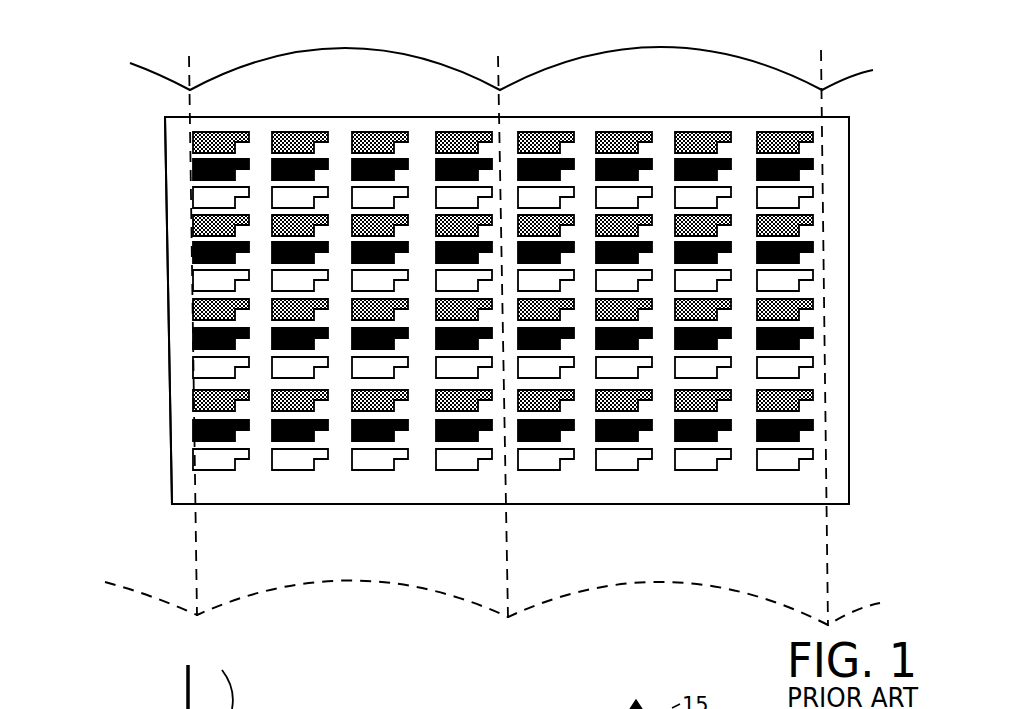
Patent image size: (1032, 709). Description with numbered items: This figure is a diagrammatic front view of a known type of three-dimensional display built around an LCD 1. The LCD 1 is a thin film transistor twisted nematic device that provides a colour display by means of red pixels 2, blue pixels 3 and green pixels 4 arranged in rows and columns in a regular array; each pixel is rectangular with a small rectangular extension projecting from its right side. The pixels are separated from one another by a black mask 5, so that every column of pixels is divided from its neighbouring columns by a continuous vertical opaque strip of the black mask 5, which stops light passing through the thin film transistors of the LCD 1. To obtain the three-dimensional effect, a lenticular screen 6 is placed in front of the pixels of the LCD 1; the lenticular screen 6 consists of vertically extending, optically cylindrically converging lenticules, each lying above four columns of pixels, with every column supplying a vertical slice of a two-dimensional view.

The LCD 1 is at (861, 309).
The red pixels 2 is at (192, 142).
The blue pixels 3 is at (192, 172).
The green pixels 4 is at (192, 205).
The black mask 5 is at (740, 535).
The lenticular screen 6 is at (452, 28).